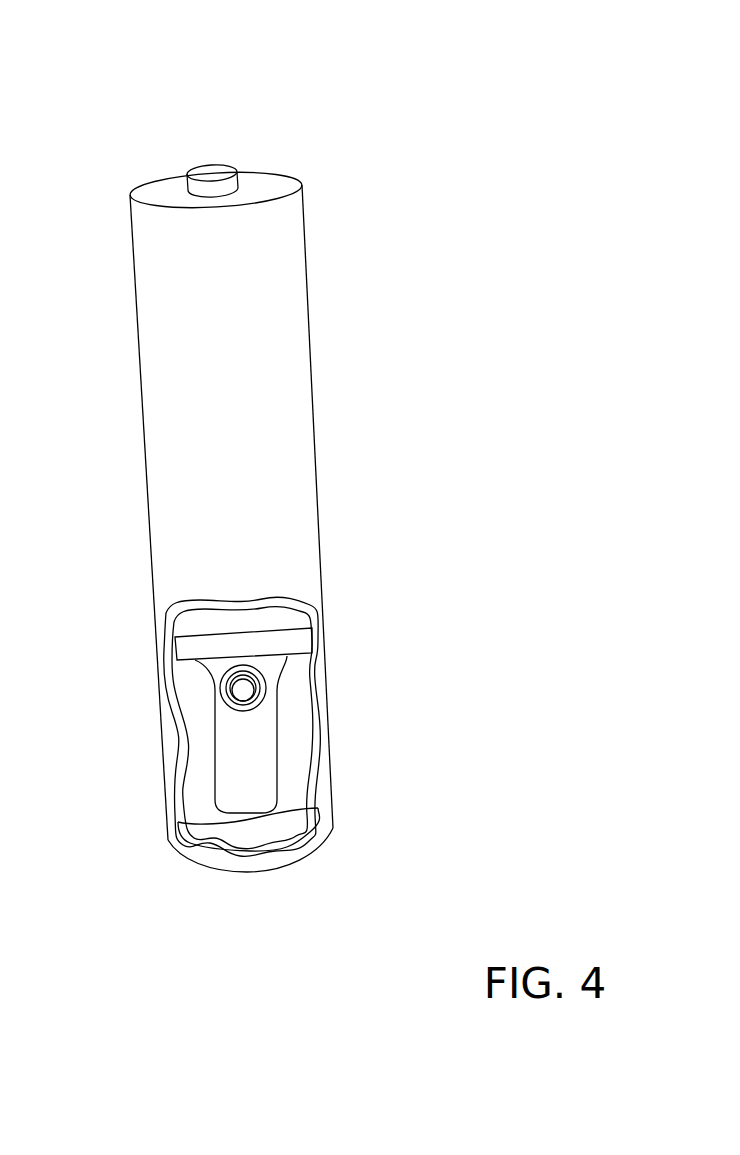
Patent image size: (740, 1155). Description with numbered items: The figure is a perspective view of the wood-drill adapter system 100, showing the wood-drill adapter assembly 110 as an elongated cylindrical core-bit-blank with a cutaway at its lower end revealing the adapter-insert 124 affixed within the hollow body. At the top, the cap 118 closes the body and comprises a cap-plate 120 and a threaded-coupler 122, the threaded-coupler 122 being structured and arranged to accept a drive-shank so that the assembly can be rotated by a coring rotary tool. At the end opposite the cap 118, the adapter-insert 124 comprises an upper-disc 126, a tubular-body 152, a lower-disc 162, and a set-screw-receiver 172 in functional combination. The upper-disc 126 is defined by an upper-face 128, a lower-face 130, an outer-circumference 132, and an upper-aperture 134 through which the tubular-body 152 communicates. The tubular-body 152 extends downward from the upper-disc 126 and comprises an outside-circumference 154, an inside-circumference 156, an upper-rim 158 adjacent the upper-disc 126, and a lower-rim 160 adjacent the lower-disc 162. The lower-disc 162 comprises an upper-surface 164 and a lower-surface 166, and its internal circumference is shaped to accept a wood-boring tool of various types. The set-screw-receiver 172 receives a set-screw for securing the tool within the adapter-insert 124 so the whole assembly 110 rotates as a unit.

The wood-drill adapter system 100 is at (413, 97).
The wood-drill adapter assembly 110 is at (447, 123).
The cap 118 is at (163, 168).
The cap-plate 120 is at (260, 196).
The threaded-coupler 122 is at (212, 172).
The adapter-insert 124 is at (287, 748).
The upper-disc 126 is at (300, 625).
The upper-face 128 is at (187, 633).
The lower-face 130 is at (185, 667).
The outer-circumference 132 is at (268, 637).
The upper-aperture 134 is at (252, 625).
The tubular-body 152 is at (262, 722).
The outside-circumference 154 is at (285, 770).
The inside-circumference 156 is at (232, 765).
The upper-rim 158 is at (240, 662).
The lower-rim 160 is at (255, 815).
The lower-disc 162 is at (168, 872).
The upper-surface 164 is at (292, 805).
The lower-surface 166 is at (285, 872).
The set-screw-receiver 172 is at (235, 712).